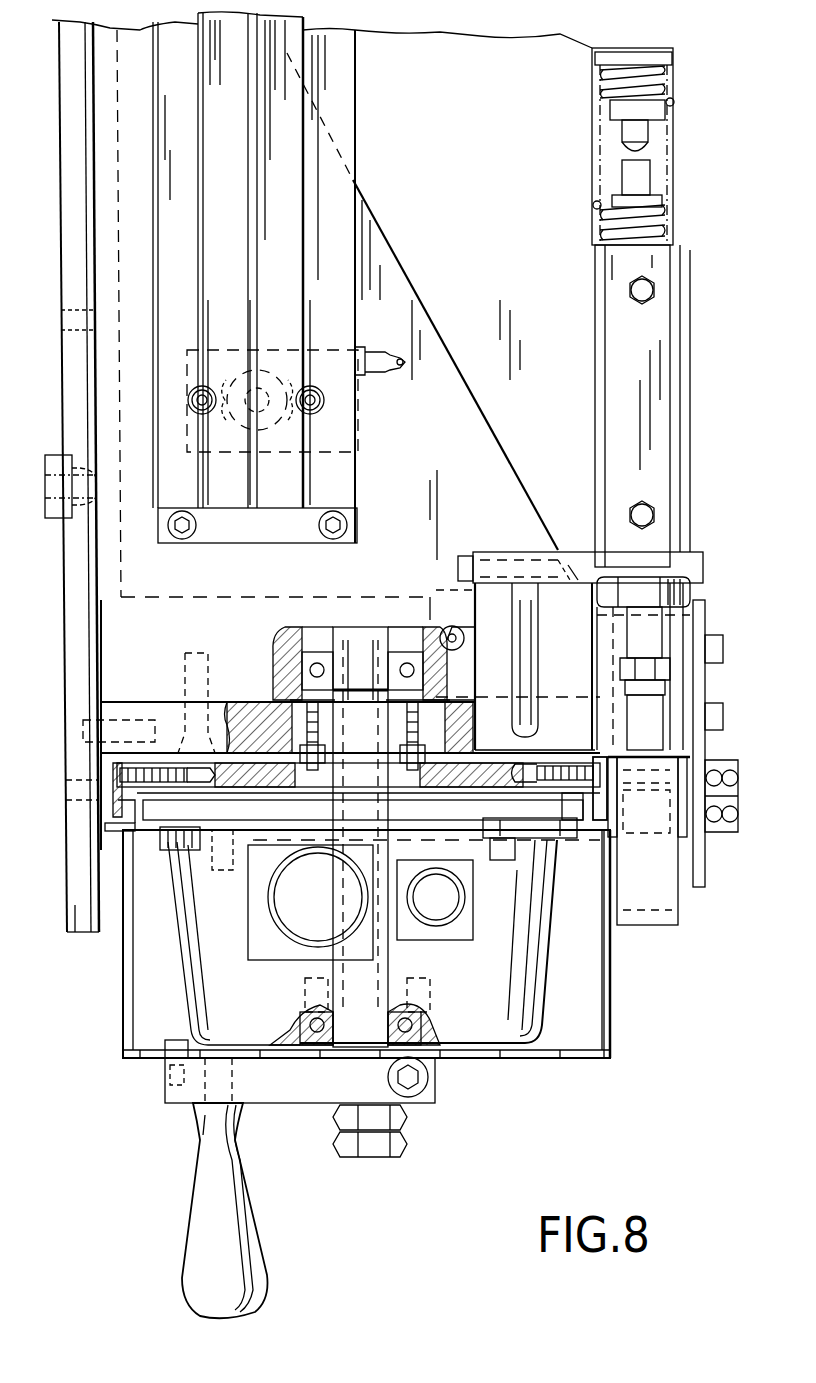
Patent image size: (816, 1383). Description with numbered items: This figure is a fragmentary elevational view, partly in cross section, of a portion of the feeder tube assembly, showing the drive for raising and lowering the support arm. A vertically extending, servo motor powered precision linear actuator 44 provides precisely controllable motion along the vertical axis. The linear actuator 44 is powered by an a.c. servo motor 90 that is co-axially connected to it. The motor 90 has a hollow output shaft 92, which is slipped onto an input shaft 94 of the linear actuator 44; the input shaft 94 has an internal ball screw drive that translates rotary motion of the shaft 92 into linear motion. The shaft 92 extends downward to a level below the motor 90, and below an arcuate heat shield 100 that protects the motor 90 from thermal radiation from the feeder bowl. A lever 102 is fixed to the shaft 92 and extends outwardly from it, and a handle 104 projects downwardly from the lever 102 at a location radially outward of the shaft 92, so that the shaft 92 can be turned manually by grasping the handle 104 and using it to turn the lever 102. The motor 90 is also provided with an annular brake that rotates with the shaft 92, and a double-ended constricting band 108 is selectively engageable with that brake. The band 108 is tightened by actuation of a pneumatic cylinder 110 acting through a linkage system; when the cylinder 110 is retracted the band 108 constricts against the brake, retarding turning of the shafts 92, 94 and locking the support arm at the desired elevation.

The linear actuator 44 is at (580, 75).
The pneumatic cylinder 110 is at (688, 352).
The hollow output shaft 92 is at (355, 737).
The double-ended constricting band 108 is at (133, 810).
The servo motor 90 is at (522, 960).
The input shaft 94 is at (337, 968).
The arcuate heat shield 100 is at (612, 1010).
The lever 102 is at (277, 1105).
The handle 104 is at (265, 1253).